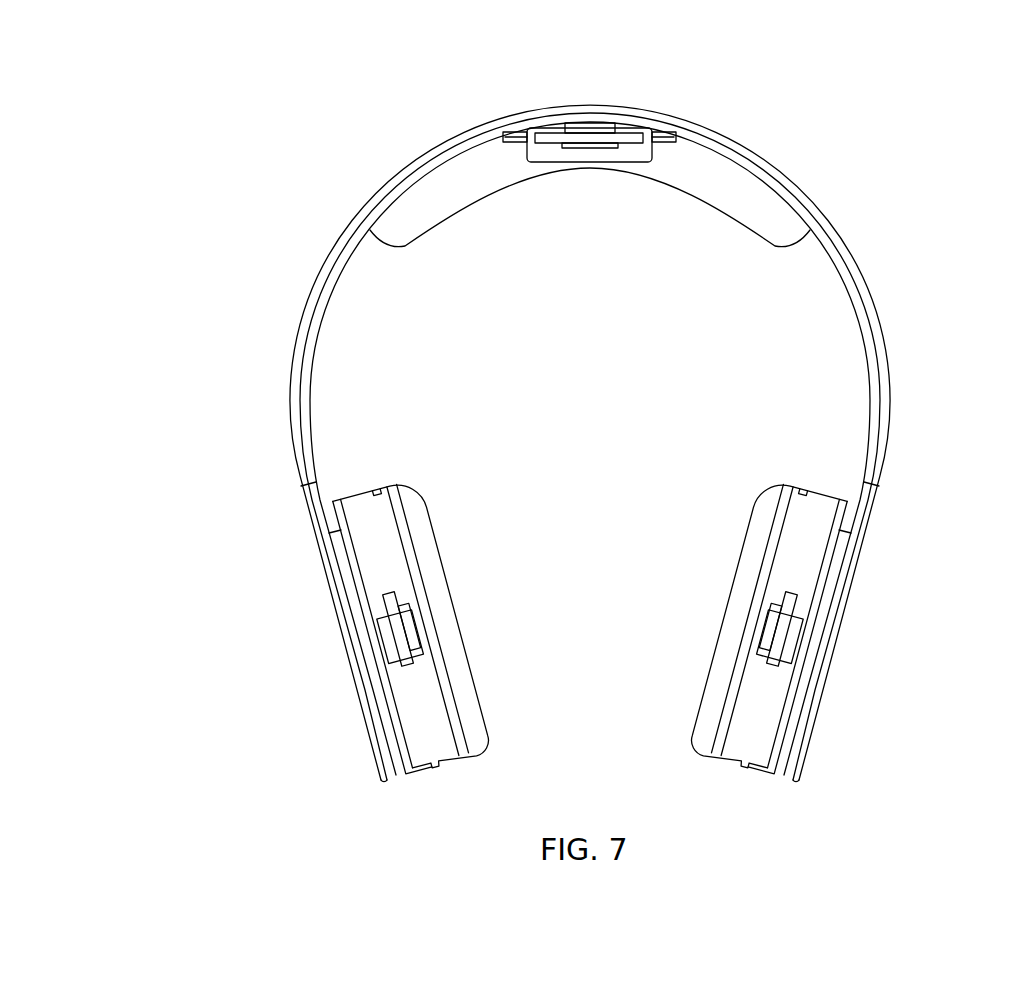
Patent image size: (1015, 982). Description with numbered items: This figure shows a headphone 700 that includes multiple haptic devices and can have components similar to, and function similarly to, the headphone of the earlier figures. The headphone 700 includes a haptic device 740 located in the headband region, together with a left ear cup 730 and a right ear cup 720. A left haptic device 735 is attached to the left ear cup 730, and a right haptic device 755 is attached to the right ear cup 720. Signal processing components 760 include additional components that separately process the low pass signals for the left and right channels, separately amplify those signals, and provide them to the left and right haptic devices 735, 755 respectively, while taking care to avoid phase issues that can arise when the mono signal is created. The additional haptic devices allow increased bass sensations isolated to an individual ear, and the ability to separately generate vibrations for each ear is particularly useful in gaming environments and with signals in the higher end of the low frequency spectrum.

The headphone 700 is at (816, 135).
The right ear cup 720 is at (847, 617).
The left ear cup 730 is at (389, 607).
The left haptic device 735 is at (383, 643).
The haptic device 740 is at (583, 145).
The right haptic device 755 is at (800, 633).
The signal processing components 760 is at (423, 690).